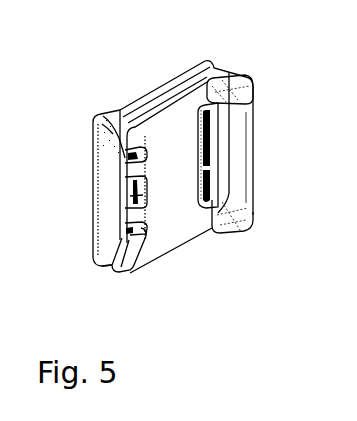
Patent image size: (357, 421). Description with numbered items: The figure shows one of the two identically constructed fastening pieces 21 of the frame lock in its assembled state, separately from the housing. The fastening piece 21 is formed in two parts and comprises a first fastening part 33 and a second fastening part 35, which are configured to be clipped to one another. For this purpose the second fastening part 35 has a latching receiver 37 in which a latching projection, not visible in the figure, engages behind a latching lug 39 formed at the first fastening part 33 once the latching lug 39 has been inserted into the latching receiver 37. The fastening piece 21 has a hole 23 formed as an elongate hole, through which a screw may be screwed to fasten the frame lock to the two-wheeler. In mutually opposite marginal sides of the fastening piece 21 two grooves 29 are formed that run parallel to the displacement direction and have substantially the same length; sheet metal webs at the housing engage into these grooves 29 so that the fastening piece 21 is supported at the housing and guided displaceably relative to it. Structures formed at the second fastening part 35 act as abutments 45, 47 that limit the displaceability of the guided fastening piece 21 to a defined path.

The fastening piece 21 is at (117, 72).
The hole 23 is at (214, 178).
The groove 29 is at (173, 92).
The first fastening part 33 is at (173, 232).
The second fastening part 35 is at (118, 112).
The latching receiver 37 is at (128, 190).
The latching lug 39 is at (128, 217).
The abutment 45 is at (215, 82).
The abutment 47 is at (107, 133).